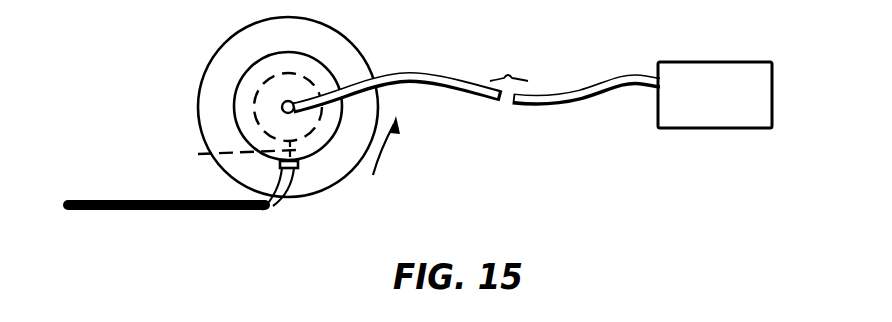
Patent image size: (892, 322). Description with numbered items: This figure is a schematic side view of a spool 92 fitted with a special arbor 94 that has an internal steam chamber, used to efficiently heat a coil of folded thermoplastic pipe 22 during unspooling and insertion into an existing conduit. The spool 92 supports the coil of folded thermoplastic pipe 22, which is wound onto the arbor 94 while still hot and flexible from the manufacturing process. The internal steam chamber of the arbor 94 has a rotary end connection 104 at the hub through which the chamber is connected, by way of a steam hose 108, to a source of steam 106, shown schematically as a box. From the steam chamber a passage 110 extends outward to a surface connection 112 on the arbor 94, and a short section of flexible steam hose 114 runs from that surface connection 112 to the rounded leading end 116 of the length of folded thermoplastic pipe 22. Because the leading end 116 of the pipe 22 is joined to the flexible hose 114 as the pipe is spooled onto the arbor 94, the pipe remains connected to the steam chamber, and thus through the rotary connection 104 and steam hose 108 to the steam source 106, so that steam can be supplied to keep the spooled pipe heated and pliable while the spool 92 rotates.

The folded thermoplastic pipe 22 is at (117, 211).
The spool 92 is at (203, 69).
The arbor 94 is at (237, 130).
The rotary end connection 104 is at (281, 108).
The source of steam 106 is at (710, 129).
The steam hose 108 is at (467, 99).
The passage 110 is at (200, 154).
The surface connection 112 is at (300, 170).
The flexible steam hose 114 is at (274, 213).
The rounded leading end 116 is at (260, 212).